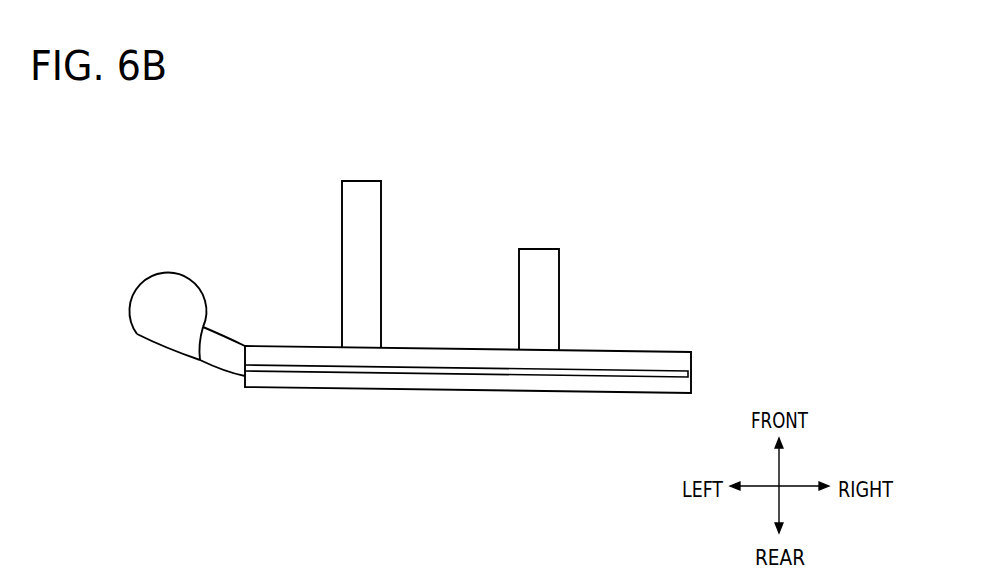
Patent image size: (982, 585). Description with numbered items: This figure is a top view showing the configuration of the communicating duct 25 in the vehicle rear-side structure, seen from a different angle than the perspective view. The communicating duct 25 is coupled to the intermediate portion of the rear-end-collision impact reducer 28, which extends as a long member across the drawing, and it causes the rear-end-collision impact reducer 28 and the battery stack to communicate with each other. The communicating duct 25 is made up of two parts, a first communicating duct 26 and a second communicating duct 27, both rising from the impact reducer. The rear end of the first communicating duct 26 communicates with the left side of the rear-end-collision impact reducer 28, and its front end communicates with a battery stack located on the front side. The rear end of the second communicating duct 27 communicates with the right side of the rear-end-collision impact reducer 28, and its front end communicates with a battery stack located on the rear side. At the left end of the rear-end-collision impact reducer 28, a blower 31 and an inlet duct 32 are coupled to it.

The communicating duct 25 is at (532, 118).
The first communicating duct 26 is at (355, 179).
The second communicating duct 27 is at (530, 248).
The rear-end-collision impact reducer 28 is at (428, 390).
The blower 31 is at (131, 326).
The inlet duct 32 is at (207, 362).